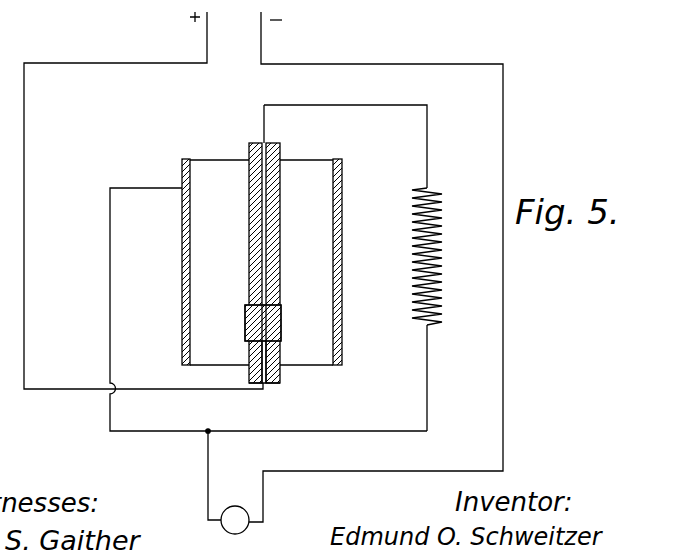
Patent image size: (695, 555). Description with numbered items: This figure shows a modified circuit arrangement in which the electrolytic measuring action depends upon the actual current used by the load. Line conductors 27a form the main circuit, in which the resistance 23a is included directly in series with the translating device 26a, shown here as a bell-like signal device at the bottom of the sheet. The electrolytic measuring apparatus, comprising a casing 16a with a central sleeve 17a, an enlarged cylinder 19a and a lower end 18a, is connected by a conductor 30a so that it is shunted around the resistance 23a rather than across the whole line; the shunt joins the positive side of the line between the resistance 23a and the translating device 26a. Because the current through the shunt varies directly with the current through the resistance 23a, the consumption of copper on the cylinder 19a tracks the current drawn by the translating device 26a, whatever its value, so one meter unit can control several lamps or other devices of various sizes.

The circuit conductors 27a is at (112, 63).
The conductor connected to casing 30a is at (113, 268).
The resistance 23a is at (430, 190).
The casing 16a is at (192, 285).
The insulating sleeve 17a is at (281, 150).
The cylinder 19a is at (295, 306).
The lower end of sleeve 18a is at (281, 377).
The translating device 26a is at (250, 525).